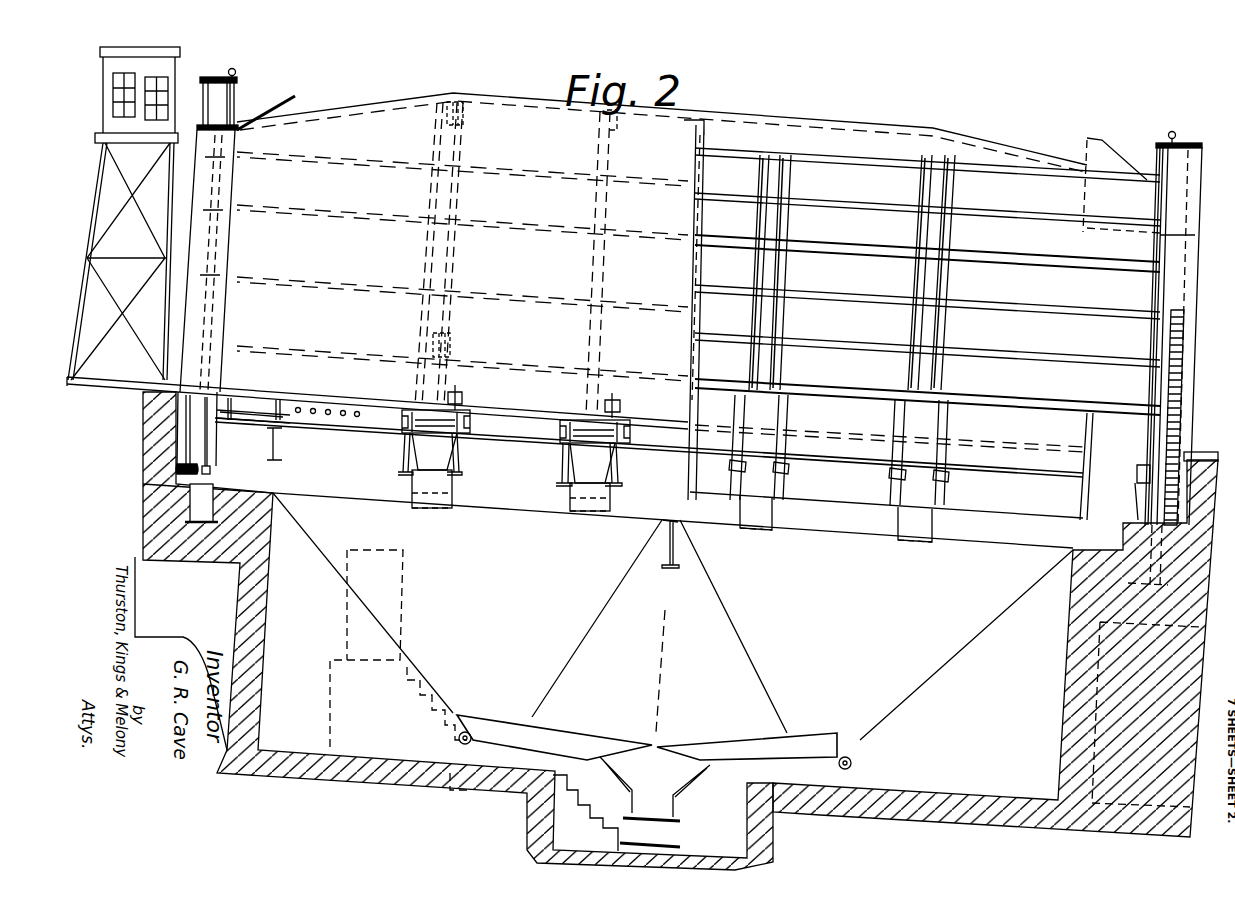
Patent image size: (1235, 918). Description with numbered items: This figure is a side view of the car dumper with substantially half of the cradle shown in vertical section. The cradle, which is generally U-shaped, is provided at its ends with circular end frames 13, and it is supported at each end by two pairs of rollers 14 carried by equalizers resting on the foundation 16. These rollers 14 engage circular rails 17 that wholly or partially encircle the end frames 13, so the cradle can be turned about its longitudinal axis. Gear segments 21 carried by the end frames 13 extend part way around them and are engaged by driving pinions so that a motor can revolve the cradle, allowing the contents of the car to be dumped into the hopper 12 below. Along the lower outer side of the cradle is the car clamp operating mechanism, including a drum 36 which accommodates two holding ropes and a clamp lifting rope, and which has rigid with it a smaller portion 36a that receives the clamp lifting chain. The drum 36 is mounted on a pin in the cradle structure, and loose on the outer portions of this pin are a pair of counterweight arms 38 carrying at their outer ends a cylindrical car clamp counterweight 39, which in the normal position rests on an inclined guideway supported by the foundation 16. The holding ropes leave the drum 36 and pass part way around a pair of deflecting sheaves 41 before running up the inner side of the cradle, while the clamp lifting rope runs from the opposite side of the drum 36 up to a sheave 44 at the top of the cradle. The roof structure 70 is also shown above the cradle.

The hopper 12 is at (673, 670).
The circular end frames 13 is at (240, 88).
The rollers 14 is at (1137, 473).
The foundation 16 is at (148, 429).
The circular rails 17 is at (209, 477).
The gear segments 21 is at (189, 468).
The drum 36 is at (443, 380).
The smaller portion of the drum 36a is at (462, 397).
The counterweight arms 38 is at (403, 458).
The car clamp counterweight 39 is at (428, 512).
The deflecting sheaves 41 is at (432, 340).
The sheave 44 is at (463, 112).
The roof 70 is at (384, 106).